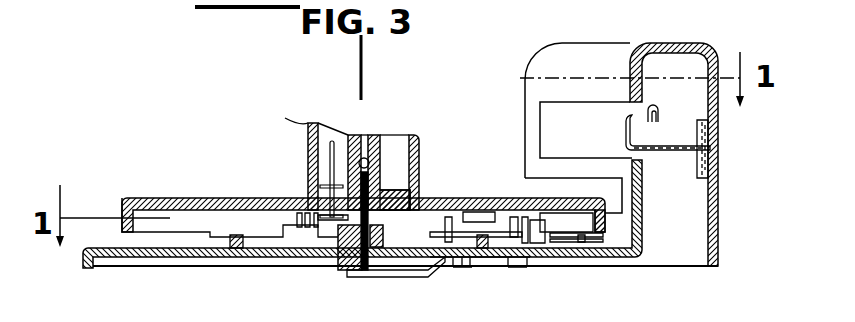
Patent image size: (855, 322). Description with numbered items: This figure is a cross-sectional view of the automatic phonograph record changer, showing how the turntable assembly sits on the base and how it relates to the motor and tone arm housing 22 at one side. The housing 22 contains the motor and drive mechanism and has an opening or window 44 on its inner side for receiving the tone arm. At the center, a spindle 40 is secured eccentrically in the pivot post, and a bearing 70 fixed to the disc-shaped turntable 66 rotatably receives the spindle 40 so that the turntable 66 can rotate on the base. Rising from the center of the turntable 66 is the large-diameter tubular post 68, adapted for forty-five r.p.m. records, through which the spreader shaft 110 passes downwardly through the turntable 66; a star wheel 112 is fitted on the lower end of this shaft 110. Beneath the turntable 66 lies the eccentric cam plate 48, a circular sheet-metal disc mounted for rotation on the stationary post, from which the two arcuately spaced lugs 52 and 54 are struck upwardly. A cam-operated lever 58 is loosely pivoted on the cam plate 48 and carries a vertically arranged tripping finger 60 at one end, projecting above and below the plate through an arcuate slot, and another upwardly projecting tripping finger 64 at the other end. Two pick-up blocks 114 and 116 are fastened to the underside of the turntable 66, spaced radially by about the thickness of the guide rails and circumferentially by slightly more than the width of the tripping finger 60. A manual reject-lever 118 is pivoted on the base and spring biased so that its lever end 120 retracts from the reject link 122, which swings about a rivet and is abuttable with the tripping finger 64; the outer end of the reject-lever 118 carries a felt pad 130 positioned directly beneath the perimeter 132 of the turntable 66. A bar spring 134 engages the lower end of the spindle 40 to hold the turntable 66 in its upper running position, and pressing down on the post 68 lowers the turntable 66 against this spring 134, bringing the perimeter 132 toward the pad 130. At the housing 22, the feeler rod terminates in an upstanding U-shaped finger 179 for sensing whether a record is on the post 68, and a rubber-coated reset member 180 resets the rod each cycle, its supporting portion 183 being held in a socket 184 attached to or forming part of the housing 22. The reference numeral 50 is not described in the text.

The motor and tone arm housing 22 is at (718, 242).
The spindle 40 is at (383, 166).
The opening or window 44 is at (590, 102).
The eccentric cam plate 48 is at (216, 240).
The support plate 50 is at (205, 232).
The lug 52 is at (304, 212).
The lug 54 is at (300, 214).
The cam-operated lever 58 is at (495, 212).
The tripping finger 60 is at (450, 212).
The tripping finger 64 is at (517, 212).
The turntable 66 is at (128, 192).
The tubular post 68 is at (290, 118).
The bearing 70 is at (383, 137).
The spreader shaft 110 is at (308, 158).
The star wheel 112 is at (326, 222).
The pick-up block 114 is at (405, 193).
The pick-up block 116 is at (468, 212).
The manual reject-lever 118 is at (594, 244).
The lever end 120 is at (545, 226).
The reject link 122 is at (540, 205).
The felt pad 130 is at (603, 240).
The perimeter 132 is at (605, 227).
The bar spring 134 is at (395, 278).
The U-shaped finger 179 is at (653, 107).
The reset member 180 is at (665, 125).
The supporting portion 183 is at (715, 133).
The socket 184 is at (697, 148).